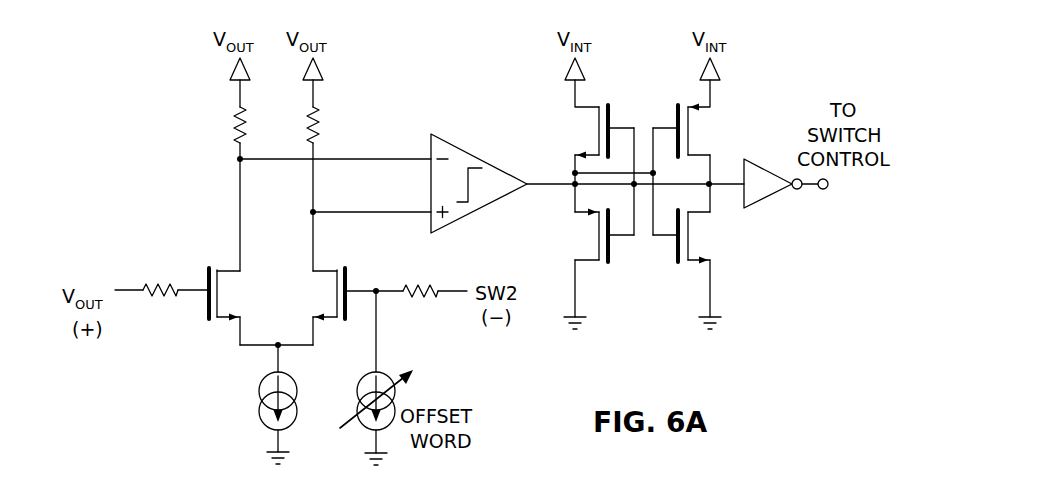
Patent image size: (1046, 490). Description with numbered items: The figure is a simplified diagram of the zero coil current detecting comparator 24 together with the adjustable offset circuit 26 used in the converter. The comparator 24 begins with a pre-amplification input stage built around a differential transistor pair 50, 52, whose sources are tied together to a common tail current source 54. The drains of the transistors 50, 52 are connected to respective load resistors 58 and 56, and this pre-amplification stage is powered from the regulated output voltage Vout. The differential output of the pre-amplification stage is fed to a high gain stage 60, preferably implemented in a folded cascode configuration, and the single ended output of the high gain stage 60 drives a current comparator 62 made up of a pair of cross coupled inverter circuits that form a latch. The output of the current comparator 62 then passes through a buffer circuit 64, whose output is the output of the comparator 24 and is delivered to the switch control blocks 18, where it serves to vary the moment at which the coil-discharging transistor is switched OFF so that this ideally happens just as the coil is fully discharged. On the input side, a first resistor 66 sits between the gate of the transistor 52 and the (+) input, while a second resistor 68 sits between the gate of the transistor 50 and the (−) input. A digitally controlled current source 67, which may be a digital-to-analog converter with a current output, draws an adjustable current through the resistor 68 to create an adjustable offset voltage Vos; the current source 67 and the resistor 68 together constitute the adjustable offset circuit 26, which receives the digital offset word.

The switch control blocks 18 is at (836, 184).
The ZCCD comparator 24 is at (374, 94).
The adjustable offset circuit 26 is at (437, 356).
The transistor 50 is at (326, 268).
The transistor 52 is at (232, 268).
The tail current source 54 is at (258, 413).
The load resistor 56 is at (233, 121).
The load resistor 58 is at (322, 121).
The high gain stage 60 is at (510, 173).
The current comparator 62 is at (638, 93).
The buffer circuit 64 is at (757, 165).
The first resistor 66 is at (153, 285).
The digitally controlled current source 67 is at (357, 386).
The second resistor 68 is at (413, 286).